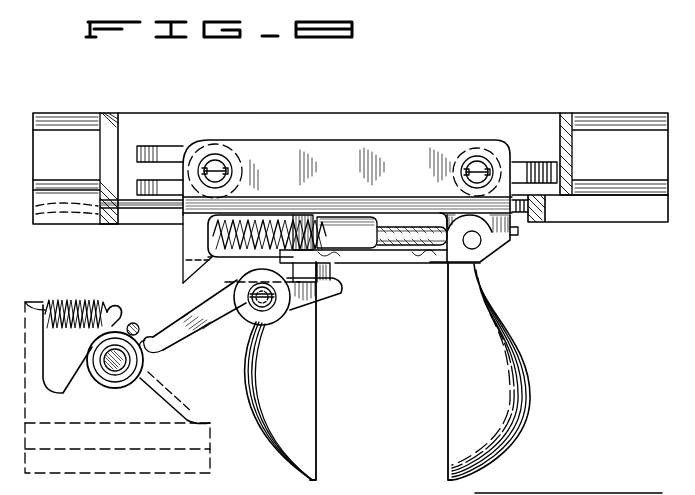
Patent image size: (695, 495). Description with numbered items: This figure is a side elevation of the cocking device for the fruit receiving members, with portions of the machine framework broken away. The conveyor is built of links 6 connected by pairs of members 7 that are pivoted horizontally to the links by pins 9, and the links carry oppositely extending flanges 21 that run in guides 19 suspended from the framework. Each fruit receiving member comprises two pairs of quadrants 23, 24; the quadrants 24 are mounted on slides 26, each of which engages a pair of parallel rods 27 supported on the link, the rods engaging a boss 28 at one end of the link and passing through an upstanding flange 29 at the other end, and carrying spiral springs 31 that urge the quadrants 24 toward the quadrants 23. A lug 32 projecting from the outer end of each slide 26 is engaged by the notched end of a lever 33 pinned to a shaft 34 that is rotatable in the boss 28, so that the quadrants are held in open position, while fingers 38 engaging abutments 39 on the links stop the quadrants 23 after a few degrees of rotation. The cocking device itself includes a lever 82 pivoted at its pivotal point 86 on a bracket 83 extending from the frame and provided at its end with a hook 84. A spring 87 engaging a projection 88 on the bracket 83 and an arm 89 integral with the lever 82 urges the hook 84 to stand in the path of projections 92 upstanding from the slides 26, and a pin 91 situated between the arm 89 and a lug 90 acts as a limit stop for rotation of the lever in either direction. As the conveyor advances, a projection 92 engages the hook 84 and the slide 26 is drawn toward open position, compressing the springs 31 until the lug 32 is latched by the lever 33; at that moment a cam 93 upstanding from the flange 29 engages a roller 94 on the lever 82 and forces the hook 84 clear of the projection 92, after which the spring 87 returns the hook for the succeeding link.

The link 6 is at (315, 145).
The member 7 is at (164, 146).
The pin 9 is at (216, 168).
The guide 19 is at (614, 218).
The flange 21 is at (266, 208).
The quadrant 23 is at (510, 372).
The quadrant 24 is at (307, 373).
The slide 26 is at (353, 232).
The rod 27 is at (403, 237).
The boss 28 is at (443, 217).
The flange 29 is at (187, 254).
The spiral spring 31 is at (209, 266).
The lug 32 is at (302, 232).
The lever 33 is at (437, 262).
The shaft 34 is at (472, 240).
The finger 38 is at (503, 247).
The abutment 39 is at (512, 233).
The lever 82 is at (173, 333).
The bracket 83 is at (147, 375).
The hook 84 is at (336, 293).
The pivotal point 86 is at (112, 368).
The spring 87 is at (77, 300).
The projection 88 is at (32, 360).
The arm 89 is at (117, 310).
The lug 90 is at (150, 347).
The pin 91 is at (135, 327).
The projection 92 is at (303, 271).
The cam 93 is at (187, 268).
The roller 94 is at (236, 279).